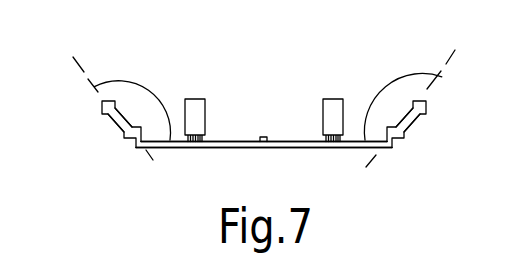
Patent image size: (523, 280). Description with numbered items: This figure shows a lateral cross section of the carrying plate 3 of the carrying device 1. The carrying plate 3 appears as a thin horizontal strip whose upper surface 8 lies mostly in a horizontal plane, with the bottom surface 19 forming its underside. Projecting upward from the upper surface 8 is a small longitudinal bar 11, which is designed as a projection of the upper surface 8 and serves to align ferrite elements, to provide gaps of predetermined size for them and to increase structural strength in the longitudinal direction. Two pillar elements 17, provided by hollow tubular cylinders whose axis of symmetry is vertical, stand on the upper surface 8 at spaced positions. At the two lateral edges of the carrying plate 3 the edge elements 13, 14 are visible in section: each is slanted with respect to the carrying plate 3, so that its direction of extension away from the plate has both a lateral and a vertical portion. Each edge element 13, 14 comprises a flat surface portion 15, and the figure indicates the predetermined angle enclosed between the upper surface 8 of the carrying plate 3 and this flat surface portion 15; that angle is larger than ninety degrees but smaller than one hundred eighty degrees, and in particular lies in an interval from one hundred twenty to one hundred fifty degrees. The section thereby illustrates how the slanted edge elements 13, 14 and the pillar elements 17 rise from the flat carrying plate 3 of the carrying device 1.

The carrying device 1 is at (105, 178).
The carrying plate 3 is at (357, 150).
The upper surface 8 is at (218, 142).
The longitudinal bar 11 is at (262, 137).
The edge element 13 is at (425, 108).
The edge element 14 is at (110, 113).
The flat surface portion 15 is at (125, 118).
The pillar element 17 is at (193, 98).
The bottom surface 19 is at (283, 150).